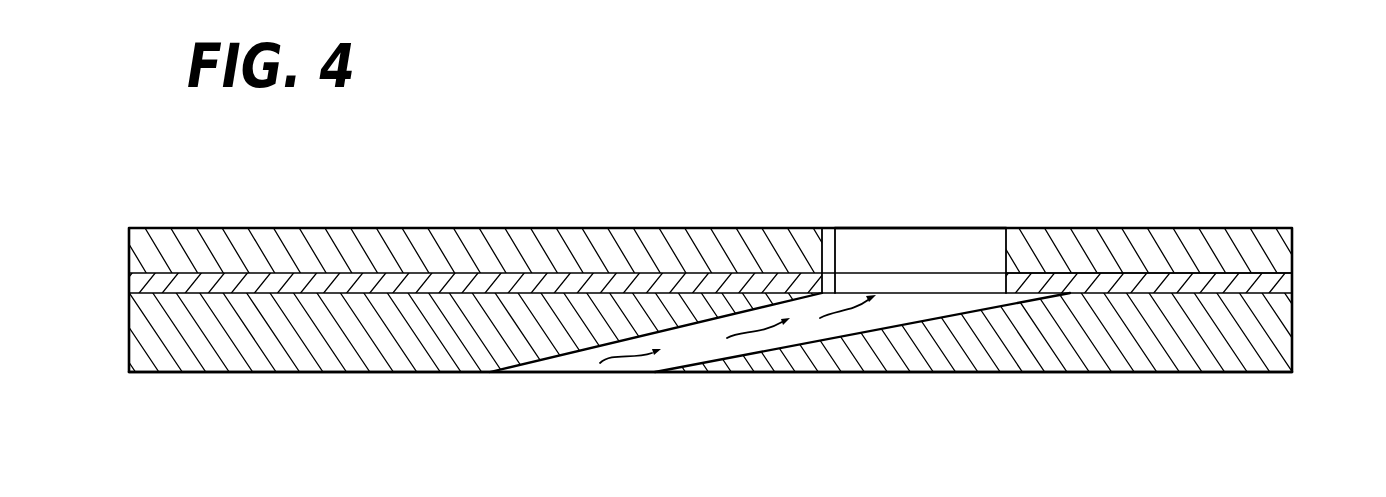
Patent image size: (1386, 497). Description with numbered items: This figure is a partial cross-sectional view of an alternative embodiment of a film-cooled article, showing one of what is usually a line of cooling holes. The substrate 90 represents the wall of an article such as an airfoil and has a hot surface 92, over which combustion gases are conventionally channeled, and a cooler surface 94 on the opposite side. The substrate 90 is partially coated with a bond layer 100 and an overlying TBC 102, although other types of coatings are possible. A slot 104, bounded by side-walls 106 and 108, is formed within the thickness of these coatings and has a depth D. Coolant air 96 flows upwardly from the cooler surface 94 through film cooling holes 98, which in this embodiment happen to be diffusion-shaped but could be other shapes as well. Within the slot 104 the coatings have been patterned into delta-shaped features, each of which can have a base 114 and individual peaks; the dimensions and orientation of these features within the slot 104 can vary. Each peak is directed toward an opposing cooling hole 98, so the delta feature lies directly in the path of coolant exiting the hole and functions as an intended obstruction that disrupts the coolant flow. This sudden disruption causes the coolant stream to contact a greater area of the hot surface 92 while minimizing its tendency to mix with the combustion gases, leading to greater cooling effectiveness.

The substrate 90 is at (1280, 329).
The hot surface 92 is at (1274, 285).
The cooler surface 94 is at (1215, 385).
The coolant air 96 is at (635, 355).
The film cooling holes 98 is at (700, 343).
The bond layer 100 is at (128, 284).
The TBC 102 is at (128, 255).
The slot 104 is at (853, 216).
The side-wall 106 is at (825, 252).
The side-wall 108 is at (1006, 250).
The depth D is at (860, 249).
The base 114 is at (1165, 293).